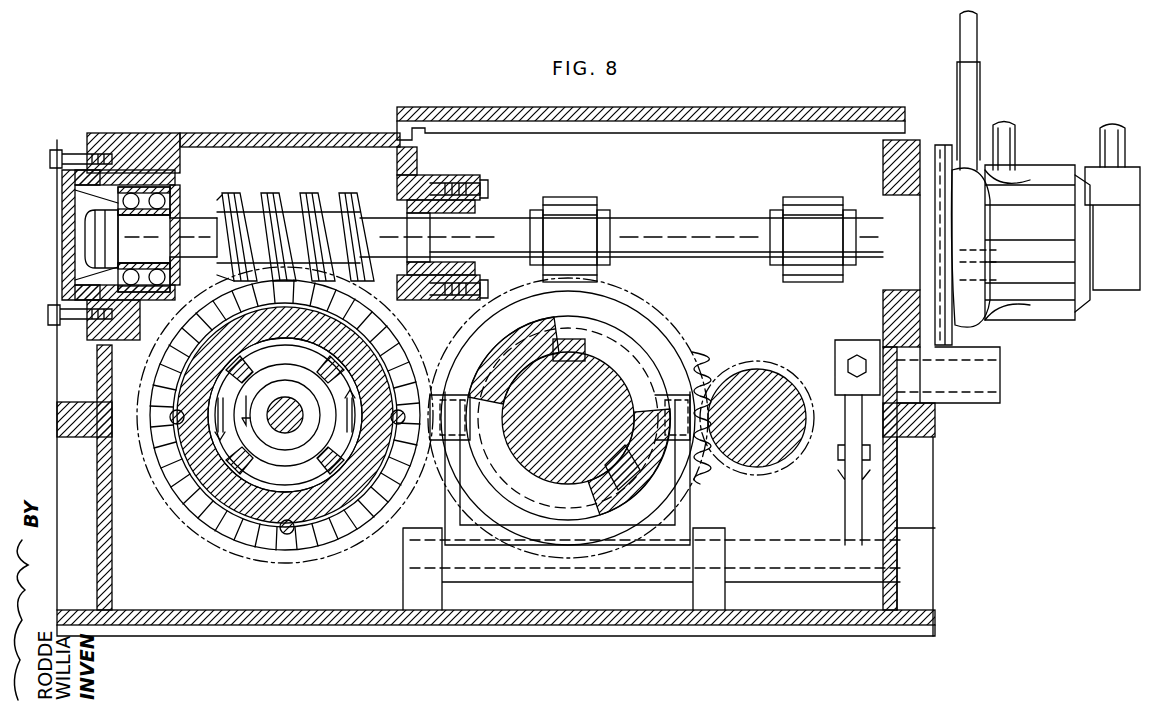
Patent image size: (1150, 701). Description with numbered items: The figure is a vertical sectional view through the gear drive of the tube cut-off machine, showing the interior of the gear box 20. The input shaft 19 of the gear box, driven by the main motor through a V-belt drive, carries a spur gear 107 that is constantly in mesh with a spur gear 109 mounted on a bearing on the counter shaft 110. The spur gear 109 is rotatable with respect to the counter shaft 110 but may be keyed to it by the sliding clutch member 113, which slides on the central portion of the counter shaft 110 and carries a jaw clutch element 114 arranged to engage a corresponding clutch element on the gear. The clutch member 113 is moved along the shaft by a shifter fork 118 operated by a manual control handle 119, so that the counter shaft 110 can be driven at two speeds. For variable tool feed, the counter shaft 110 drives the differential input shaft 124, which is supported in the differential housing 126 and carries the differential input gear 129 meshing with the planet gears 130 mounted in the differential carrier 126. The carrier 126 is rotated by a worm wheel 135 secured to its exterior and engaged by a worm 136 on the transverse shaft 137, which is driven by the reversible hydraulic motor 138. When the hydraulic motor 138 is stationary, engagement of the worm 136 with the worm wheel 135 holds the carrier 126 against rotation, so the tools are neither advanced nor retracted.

The gear box 20 is at (360, 119).
The worm 136 is at (258, 200).
The transverse shaft 137 is at (512, 228).
The manual control handle 119 is at (968, 37).
The worm wheel 135 is at (396, 303).
The jaw clutch element 114 is at (605, 340).
The counter shaft 110 is at (614, 380).
The spur gear 109 is at (692, 366).
The input shaft 19 is at (772, 413).
The differential housing 126 is at (173, 400).
The planet gears 130 is at (252, 350).
The spur gear 107 is at (700, 472).
The shifter fork 118 is at (680, 522).
The differential input shaft 124 is at (276, 455).
The differential input gear 129 is at (270, 468).
The sliding clutch member 113 is at (590, 500).
The hydraulic motor 138 is at (1028, 304).